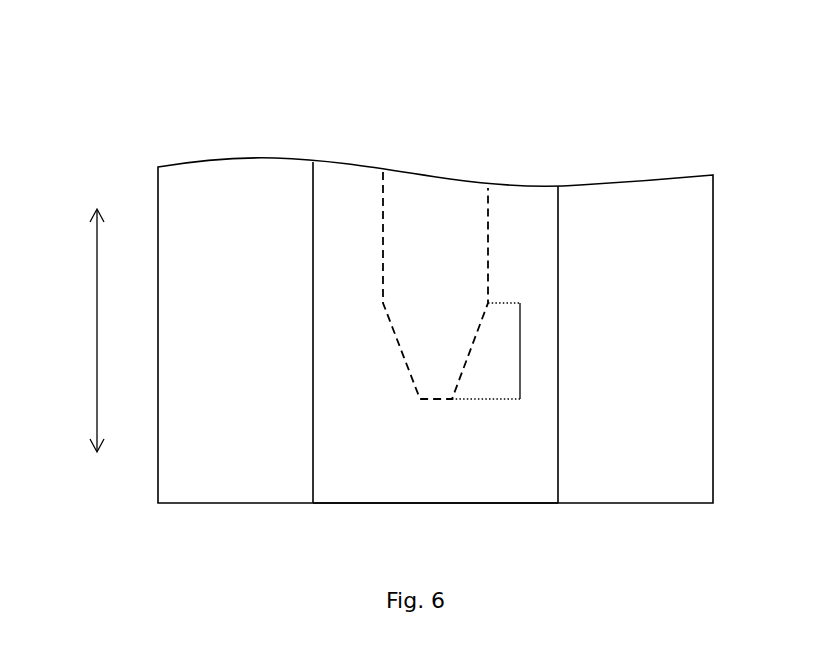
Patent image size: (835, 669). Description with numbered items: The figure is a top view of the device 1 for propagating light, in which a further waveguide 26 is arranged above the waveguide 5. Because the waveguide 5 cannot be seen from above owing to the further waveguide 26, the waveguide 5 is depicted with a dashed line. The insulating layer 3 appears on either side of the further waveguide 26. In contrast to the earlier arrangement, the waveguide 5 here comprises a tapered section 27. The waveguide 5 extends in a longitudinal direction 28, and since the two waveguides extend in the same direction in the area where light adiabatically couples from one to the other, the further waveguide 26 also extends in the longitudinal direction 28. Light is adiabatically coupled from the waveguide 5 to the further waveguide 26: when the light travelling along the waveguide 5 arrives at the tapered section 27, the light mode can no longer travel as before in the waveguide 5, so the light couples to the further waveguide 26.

The device for propagating light 1 is at (685, 139).
The insulating layer 3 is at (242, 413).
The waveguide 5 is at (441, 288).
The further waveguide 26 is at (446, 482).
The tapered section 27 is at (520, 352).
The longitudinal direction 28 is at (97, 337).